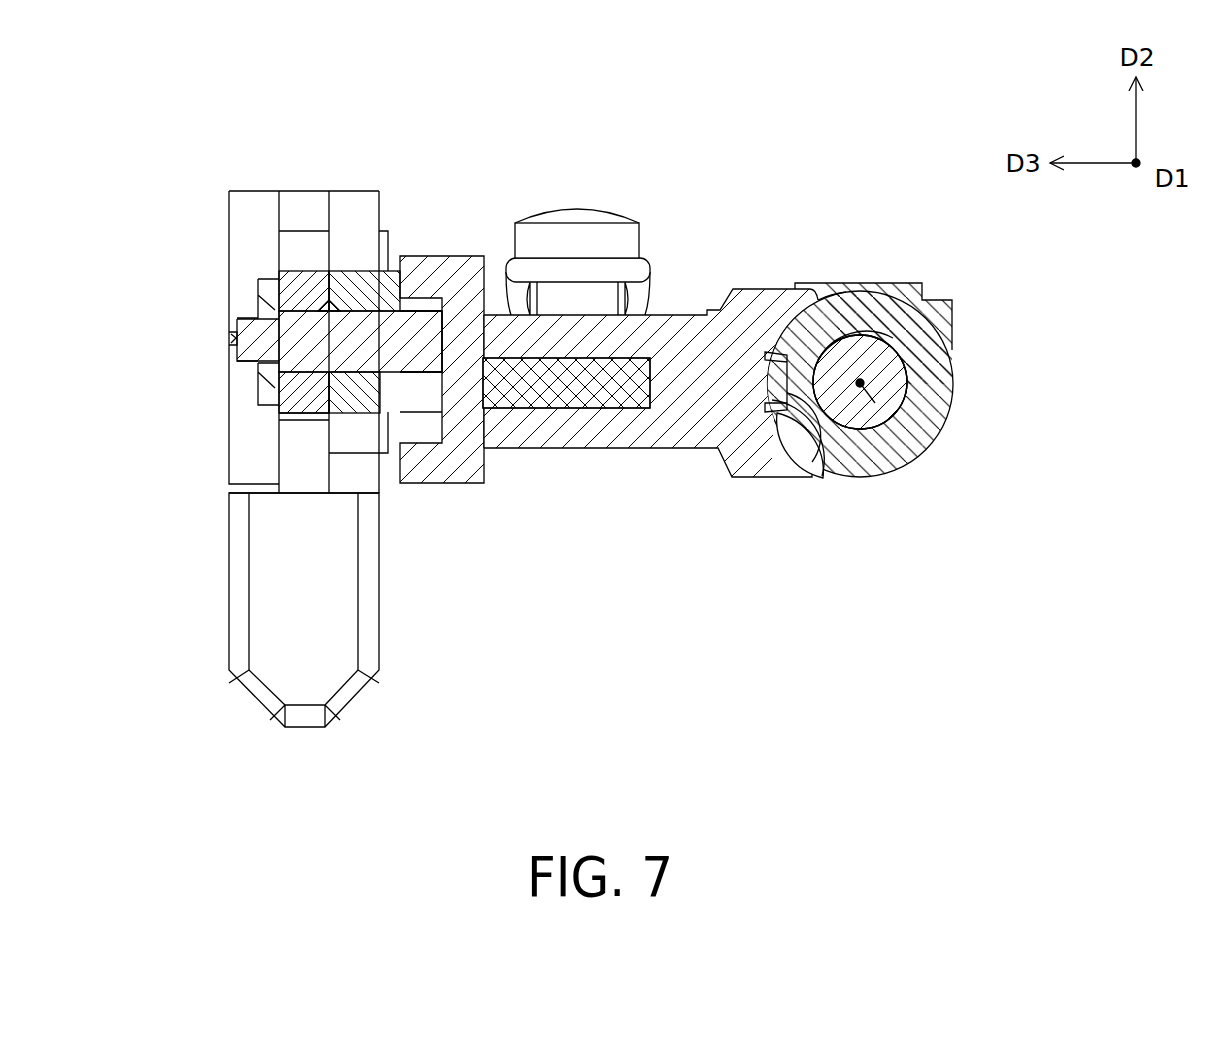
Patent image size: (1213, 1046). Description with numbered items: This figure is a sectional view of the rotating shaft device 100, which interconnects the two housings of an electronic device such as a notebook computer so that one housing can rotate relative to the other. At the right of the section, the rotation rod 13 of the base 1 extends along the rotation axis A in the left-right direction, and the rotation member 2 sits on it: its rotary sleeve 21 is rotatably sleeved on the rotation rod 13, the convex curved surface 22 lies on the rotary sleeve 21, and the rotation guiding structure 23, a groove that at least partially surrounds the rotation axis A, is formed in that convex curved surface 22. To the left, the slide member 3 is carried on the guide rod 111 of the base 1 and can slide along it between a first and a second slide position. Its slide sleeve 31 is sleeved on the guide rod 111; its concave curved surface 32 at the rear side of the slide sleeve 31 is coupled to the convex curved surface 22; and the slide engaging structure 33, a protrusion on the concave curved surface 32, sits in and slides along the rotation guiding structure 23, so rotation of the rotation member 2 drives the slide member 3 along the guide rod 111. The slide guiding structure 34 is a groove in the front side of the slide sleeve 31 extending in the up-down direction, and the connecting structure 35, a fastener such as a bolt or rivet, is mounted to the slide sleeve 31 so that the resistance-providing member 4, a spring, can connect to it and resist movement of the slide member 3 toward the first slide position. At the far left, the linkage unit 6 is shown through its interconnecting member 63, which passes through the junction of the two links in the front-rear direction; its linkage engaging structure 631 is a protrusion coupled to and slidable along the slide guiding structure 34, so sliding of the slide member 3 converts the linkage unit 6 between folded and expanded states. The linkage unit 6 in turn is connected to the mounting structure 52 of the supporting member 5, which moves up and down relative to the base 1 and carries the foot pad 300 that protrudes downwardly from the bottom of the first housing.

The rotating shaft device 100 is at (862, 57).
The base 1 is at (820, 273).
The rotation member 2 is at (962, 372).
The slide member 3 is at (683, 453).
The resistance-providing member 4 is at (573, 208).
The supporting member 5 is at (335, 476).
The linkage unit 6 is at (308, 218).
The rotation rod 13 is at (917, 418).
The rotary sleeve 21 is at (858, 450).
The convex curved surface 22 is at (787, 455).
The rotation guiding structure 23 is at (815, 440).
The slide sleeve 31 is at (552, 433).
The concave curved surface 32 is at (866, 303).
The slide engaging structure 33 is at (777, 380).
The slide guiding structure 34 is at (460, 428).
The connecting structure 35 is at (597, 243).
The mounting structure 52 is at (288, 488).
The interconnecting member 63 is at (343, 335).
The guide rod 111 is at (587, 387).
The foot pad 300 is at (302, 728).
The linkage engaging structure 631 is at (430, 347).
The rotation axis A is at (888, 466).